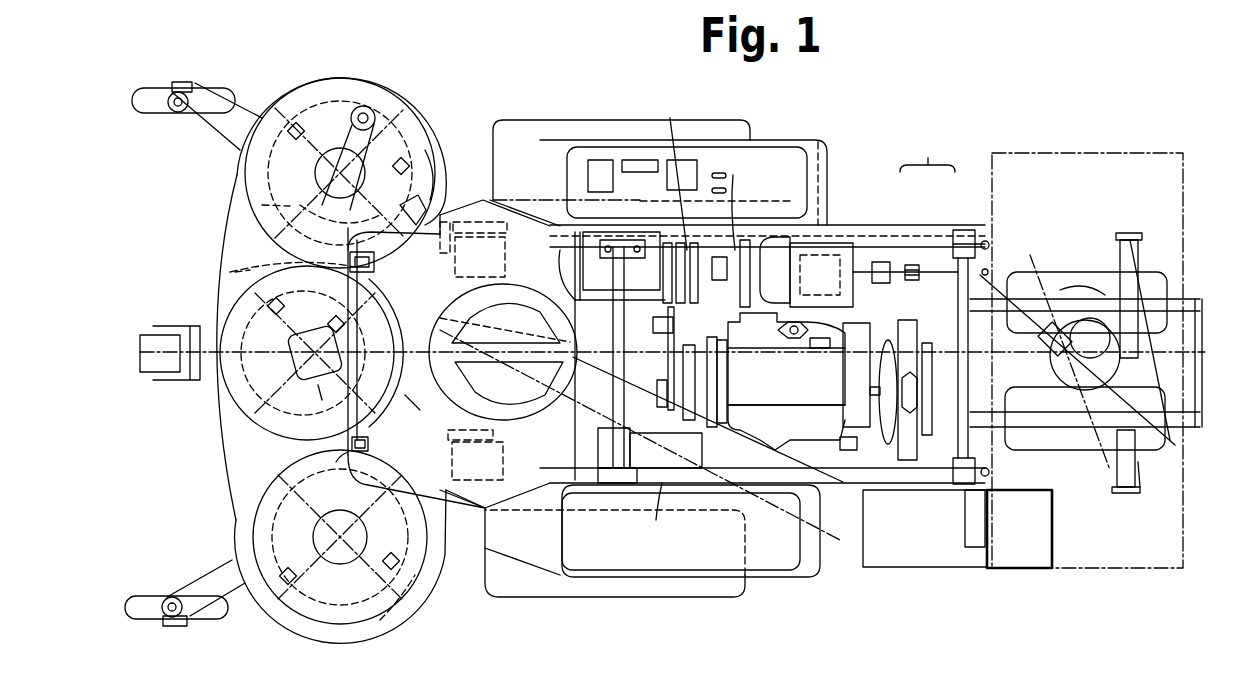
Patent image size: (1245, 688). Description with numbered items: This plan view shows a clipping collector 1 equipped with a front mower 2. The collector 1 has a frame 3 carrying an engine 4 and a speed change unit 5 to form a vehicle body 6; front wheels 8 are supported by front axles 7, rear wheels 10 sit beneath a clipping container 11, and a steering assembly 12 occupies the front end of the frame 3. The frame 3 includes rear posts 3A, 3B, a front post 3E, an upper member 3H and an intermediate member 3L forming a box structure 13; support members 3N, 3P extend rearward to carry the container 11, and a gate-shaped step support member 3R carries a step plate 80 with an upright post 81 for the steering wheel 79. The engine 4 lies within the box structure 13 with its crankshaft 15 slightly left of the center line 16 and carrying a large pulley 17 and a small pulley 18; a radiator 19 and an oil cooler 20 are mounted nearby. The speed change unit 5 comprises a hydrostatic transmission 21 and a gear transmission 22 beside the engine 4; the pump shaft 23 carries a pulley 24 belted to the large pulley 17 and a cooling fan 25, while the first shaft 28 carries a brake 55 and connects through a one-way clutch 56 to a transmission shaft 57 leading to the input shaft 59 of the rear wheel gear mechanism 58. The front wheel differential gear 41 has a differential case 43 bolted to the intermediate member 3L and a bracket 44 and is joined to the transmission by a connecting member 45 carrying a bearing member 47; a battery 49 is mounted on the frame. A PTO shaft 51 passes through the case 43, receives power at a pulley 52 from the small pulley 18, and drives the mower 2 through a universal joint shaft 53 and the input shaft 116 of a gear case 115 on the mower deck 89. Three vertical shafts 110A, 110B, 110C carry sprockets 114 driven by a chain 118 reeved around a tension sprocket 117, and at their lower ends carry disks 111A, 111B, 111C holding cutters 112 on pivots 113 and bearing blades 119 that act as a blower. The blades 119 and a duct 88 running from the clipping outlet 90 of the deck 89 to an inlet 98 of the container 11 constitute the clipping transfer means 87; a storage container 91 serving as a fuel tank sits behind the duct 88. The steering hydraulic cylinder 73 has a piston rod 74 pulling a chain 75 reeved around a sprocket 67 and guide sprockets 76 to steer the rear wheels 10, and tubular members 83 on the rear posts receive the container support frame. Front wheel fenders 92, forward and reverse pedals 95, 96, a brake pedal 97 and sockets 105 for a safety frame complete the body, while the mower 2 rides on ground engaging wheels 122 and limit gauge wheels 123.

The clipping collector 1 is at (880, 166).
The front mower 2 is at (205, 448).
The frame 3 is at (944, 225).
The rear post 3A is at (968, 490).
The rear post 3B is at (945, 300).
The front channel post 3E is at (610, 485).
The upper channel member 3H is at (860, 225).
The intermediate channel member 3L is at (628, 300).
The support channel member 3N is at (1203, 418).
The support channel member 3P is at (1203, 305).
The step support member 3R is at (458, 515).
The engine 4 is at (778, 394).
The speed change unit 5 is at (878, 255).
The vehicle body 6 is at (927, 156).
The front axle 7 is at (620, 418).
The front wheel 8 is at (571, 122).
The rear wheel 10 is at (1175, 290).
The clipping container 11 is at (1082, 153).
The steering assembly 12 is at (535, 420).
The box structure 13 is at (698, 487).
The crankshaft 15 is at (662, 333).
The center line 16 is at (815, 358).
The large pulley 17 is at (715, 427).
The small pulley 18 is at (690, 420).
The radiator 19 is at (912, 440).
The oil cooler 20 is at (930, 368).
The hydrostatic transmission 21 is at (790, 250).
The gear transmission 22 is at (845, 243).
The pump shaft 23 is at (738, 201).
The pulley 24 is at (672, 173).
The cooling fan 25 is at (750, 250).
The first shaft 28 is at (868, 300).
The front wheel differential gear 41 is at (573, 244).
The differential case 43 is at (580, 268).
The bracket 44 is at (622, 250).
The connecting member 45 is at (817, 146).
The bearing member 47 is at (718, 250).
The battery 49 is at (658, 516).
The PTO shaft 51 is at (575, 300).
The pulley 52 is at (643, 243).
The universal joint shaft 53 is at (530, 215).
The brake 55 is at (900, 255).
The one-way clutch 56 is at (960, 240).
The transmission shaft 57 is at (985, 272).
The rear wheel gear mechanism 58 is at (1085, 370).
The input shaft 59 is at (1030, 272).
The sprocket 67 is at (1052, 370).
The steering hydraulic cylinder 73 is at (1178, 440).
The piston rod 74 is at (1136, 470).
The chain 75 is at (1100, 475).
The guide sprocket 76 is at (1138, 275).
The steering wheel 79 is at (503, 352).
The step plate 80 is at (572, 428).
The upright post 81 is at (418, 412).
The tubular member 83 is at (990, 472).
The clipping transfer means 87 is at (886, 570).
The duct 88 is at (846, 578).
The mower deck 89 is at (220, 503).
The clipping outlet 90 is at (498, 322).
The storage container 91 is at (950, 568).
The front wheel fender 92 is at (495, 158).
The forward speed change pedal 95 is at (440, 293).
The reverse speed change pedal 96 is at (440, 258).
The brake pedal 97 is at (425, 150).
The hitch box 98 is at (990, 513).
The socket portion 105 is at (328, 470).
The vertical shaft 110A is at (230, 316).
The vertical shaft 110B is at (340, 537).
The vertical shaft 110C is at (334, 180).
The disk 111A is at (290, 263).
The disk 111B is at (394, 622).
The disk 111C is at (262, 205).
The cutter 112 is at (235, 272).
The pivot 113 is at (295, 312).
The sprocket 114 is at (288, 365).
The gear case 115 is at (318, 405).
The input shaft 116 is at (380, 432).
The tension sprocket 117 is at (372, 108).
The chain 118 is at (352, 218).
The blade 119 is at (312, 100).
The ground engaging wheel 122 is at (155, 600).
The limit gauge wheel 123 is at (165, 376).